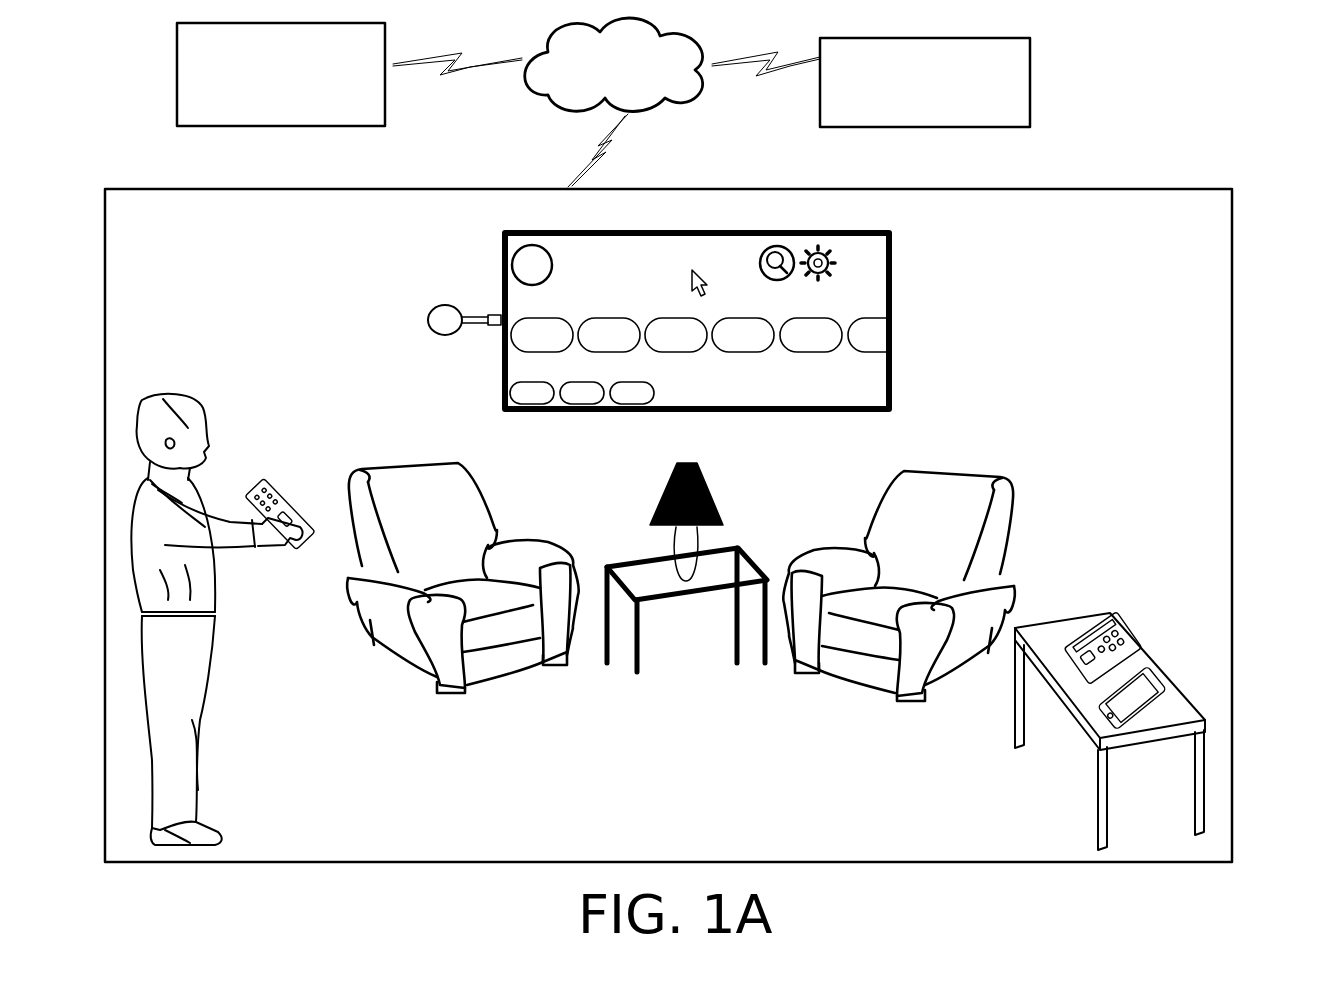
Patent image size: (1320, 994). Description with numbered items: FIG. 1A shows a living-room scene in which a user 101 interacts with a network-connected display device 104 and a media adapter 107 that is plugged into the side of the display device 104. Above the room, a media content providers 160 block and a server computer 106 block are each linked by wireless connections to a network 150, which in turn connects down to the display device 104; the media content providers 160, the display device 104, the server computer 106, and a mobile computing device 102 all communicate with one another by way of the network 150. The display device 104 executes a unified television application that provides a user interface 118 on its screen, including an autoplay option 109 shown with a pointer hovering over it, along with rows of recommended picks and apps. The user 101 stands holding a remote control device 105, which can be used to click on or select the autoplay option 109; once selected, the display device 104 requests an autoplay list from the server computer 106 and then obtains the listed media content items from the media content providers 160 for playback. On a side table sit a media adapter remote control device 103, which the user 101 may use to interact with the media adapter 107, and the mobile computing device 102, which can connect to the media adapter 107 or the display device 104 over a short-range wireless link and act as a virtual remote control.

The user 101 is at (176, 396).
The mobile computing device 102 is at (1152, 660).
The media adapter remote control device 103 is at (1110, 612).
The network-connected display device 104 is at (739, 321).
The remote control device 105 is at (300, 552).
The server computer 106 is at (925, 82).
The media adapter 107 is at (428, 320).
The autoplay option 109 is at (712, 276).
The user interface 118 is at (710, 324).
The network 150 is at (614, 64).
The media content providers 160 is at (281, 74).